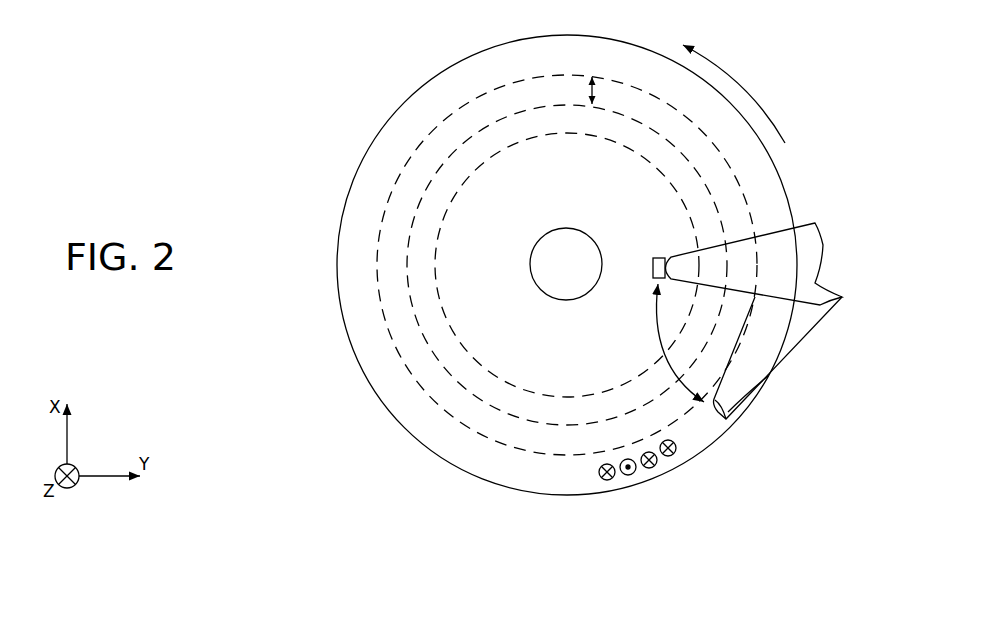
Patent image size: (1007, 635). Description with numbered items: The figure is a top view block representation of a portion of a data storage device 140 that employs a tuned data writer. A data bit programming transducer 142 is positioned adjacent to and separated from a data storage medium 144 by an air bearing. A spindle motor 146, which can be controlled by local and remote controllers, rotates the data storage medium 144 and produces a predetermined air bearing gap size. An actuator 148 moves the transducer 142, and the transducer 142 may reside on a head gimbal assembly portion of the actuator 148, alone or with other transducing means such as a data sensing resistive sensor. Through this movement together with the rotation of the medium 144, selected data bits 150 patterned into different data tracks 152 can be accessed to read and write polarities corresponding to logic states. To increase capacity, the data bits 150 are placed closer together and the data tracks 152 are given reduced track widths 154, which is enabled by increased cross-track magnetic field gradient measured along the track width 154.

The data storage device 140 is at (190, 82).
The data bit programming transducer 142 is at (659, 256).
The data storage medium 144 is at (388, 410).
The spindle motor 146 is at (566, 227).
The actuator 148 is at (752, 276).
The data bits 150 is at (662, 470).
The data tracks 152 is at (442, 161).
The track width 154 is at (609, 93).